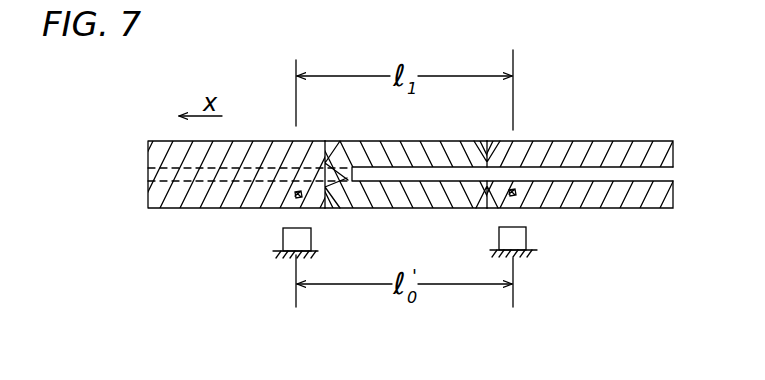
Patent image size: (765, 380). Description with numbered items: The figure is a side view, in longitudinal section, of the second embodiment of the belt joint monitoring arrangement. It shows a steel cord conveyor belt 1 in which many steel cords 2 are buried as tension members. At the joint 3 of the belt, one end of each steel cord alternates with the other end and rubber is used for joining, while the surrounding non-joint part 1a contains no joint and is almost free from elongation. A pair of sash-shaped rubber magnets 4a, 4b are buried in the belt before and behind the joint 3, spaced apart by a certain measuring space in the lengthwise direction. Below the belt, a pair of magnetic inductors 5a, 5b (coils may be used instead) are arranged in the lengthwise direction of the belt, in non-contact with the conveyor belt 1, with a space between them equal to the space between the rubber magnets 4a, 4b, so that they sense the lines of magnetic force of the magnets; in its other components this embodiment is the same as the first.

The steel cord conveyor belt 1 is at (550, 139).
The non-joint part 1a is at (305, 140).
The steel cords 2 is at (230, 160).
The joint 3 is at (383, 140).
The rubber magnet 4a is at (296, 199).
The rubber magnet 4b is at (517, 197).
The magnetic inductor 5a is at (283, 238).
The magnetic inductor 5b is at (526, 236).